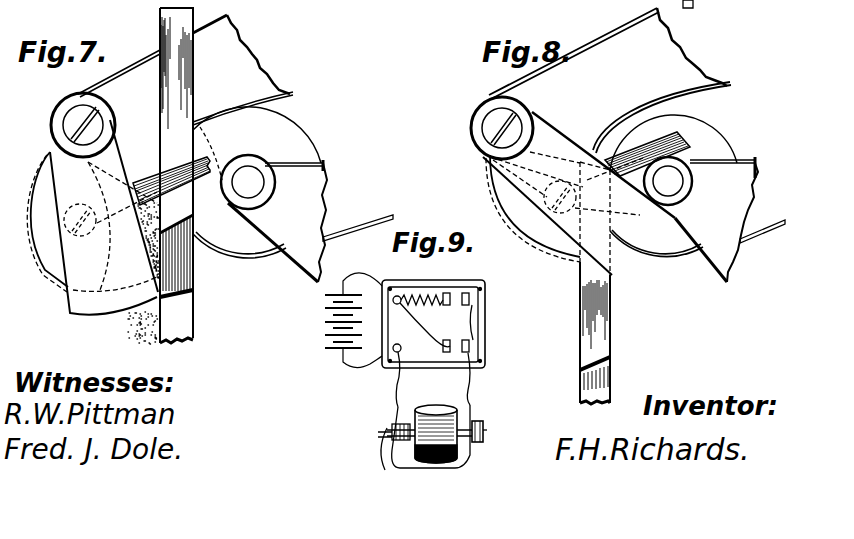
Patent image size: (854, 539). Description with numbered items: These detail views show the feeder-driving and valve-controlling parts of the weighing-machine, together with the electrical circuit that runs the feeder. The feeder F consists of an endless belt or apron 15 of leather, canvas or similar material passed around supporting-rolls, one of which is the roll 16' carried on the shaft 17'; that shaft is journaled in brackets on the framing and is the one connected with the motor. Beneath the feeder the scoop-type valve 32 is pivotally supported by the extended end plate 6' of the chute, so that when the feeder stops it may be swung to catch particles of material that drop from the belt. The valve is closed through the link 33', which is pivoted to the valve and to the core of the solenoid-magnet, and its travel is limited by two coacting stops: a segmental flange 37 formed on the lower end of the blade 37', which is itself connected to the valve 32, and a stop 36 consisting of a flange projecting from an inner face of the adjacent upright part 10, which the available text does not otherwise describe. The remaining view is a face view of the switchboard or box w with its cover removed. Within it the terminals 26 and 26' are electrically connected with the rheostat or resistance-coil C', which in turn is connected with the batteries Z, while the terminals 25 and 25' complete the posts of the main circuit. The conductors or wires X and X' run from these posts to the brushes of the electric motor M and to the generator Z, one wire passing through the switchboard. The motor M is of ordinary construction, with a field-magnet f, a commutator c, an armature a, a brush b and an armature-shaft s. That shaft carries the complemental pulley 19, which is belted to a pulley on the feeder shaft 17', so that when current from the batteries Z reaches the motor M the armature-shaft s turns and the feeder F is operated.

In FIG. 7, the end plate 6' is at (185, 68).
In FIG. 8, the end plate 6' is at (610, 80).
In FIG. 7, the upright bar 10 is at (193, 85).
In FIG. 8, the upright bar 10 is at (610, 305).
In FIG. 7, the supporting-roll 16' is at (257, 182).
In FIG. 8, the supporting-roll 16' is at (681, 186).
In FIG. 7, the shaft 17' is at (250, 170).
In FIG. 8, the shaft 17' is at (679, 166).
In FIG. 7, the endless belt or apron 15 is at (378, 222).
In FIG. 8, the endless belt or apron 15 is at (773, 222).
In FIG. 7, the feeder F is at (287, 221).
In FIG. 8, the feeder F is at (716, 187).
In FIG. 7, the valve 32 is at (47, 172).
In FIG. 8, the valve 32 is at (512, 190).
In FIG. 7, the link 33' is at (168, 171).
In FIG. 8, the link 33' is at (647, 144).
In FIG. 7, the coacting stop 37 is at (115, 274).
In FIG. 8, the coacting stop 37 is at (607, 204).
In FIG. 7, the blade 37' is at (57, 226).
In FIG. 8, the blade 37' is at (561, 160).
In FIG. 7, the stop 36 is at (180, 272).
In FIG. 8, the stop 36 is at (583, 390).
In FIG. 9, the batteries Z is at (332, 321).
In FIG. 9, the switchboard or box w is at (416, 281).
In FIG. 9, the rheostat or resistance-coil C' is at (425, 321).
In FIG. 9, the terminal 26 is at (454, 281).
In FIG. 9, the terminal 26' is at (479, 302).
In FIG. 9, the terminal 25 is at (436, 364).
In FIG. 9, the terminal 25' is at (488, 357).
In FIG. 9, the conductor or wire X is at (475, 379).
In FIG. 9, the conductor or wire X' is at (385, 381).
In FIG. 9, the electric motor M is at (435, 436).
In FIG. 9, the field-magnet f is at (428, 428).
In FIG. 9, the commutator c is at (401, 421).
In FIG. 9, the armature a is at (378, 434).
In FIG. 9, the brush b is at (389, 453).
In FIG. 9, the pulley 19 is at (478, 427).
In FIG. 9, the armature-shaft s is at (489, 427).